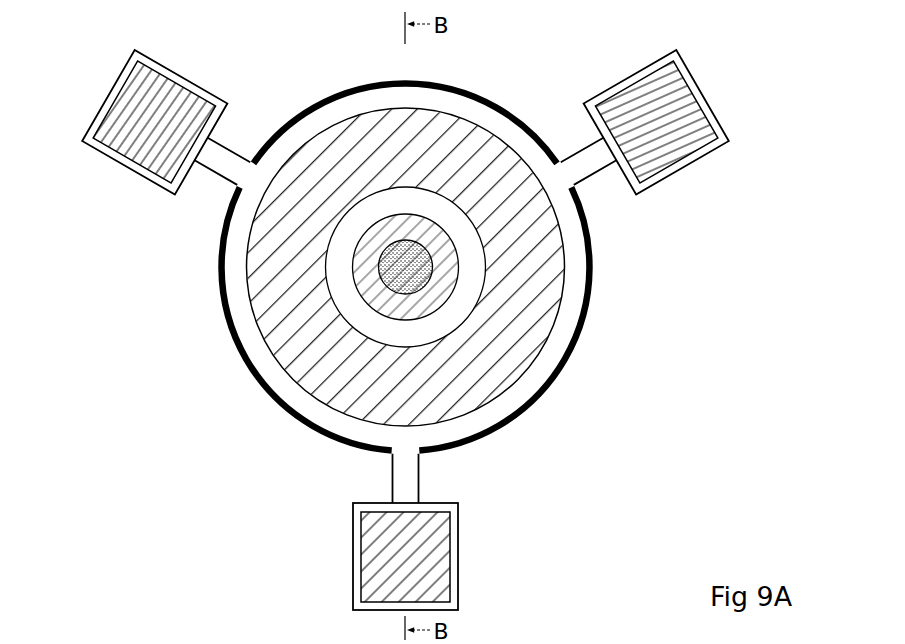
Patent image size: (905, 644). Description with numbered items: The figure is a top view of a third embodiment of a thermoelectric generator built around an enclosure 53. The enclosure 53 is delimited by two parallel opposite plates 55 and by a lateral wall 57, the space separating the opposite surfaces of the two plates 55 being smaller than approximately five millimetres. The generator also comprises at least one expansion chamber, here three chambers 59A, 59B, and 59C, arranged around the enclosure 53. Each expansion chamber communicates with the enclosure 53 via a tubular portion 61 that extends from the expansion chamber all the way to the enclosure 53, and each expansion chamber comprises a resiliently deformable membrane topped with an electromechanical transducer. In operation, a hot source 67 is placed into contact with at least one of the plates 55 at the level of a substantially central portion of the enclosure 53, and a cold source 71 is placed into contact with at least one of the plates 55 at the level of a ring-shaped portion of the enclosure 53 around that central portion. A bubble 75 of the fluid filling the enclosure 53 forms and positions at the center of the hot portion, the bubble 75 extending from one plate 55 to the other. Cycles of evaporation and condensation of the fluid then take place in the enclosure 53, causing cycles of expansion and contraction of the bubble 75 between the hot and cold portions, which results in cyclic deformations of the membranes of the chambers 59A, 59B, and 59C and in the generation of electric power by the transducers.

The enclosure 53 is at (437, 288).
The plates 55 is at (555, 352).
The lateral wall 57 is at (547, 392).
The expansion chamber 59A is at (469, 567).
The expansion chamber 59B is at (696, 111).
The expansion chamber 59C is at (122, 103).
The tubular portion 61 is at (420, 478).
The hot source 67 is at (445, 257).
The cold source 71 is at (497, 398).
The bubble 75 is at (392, 280).